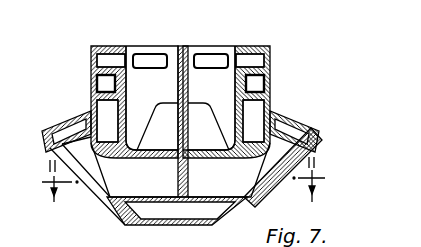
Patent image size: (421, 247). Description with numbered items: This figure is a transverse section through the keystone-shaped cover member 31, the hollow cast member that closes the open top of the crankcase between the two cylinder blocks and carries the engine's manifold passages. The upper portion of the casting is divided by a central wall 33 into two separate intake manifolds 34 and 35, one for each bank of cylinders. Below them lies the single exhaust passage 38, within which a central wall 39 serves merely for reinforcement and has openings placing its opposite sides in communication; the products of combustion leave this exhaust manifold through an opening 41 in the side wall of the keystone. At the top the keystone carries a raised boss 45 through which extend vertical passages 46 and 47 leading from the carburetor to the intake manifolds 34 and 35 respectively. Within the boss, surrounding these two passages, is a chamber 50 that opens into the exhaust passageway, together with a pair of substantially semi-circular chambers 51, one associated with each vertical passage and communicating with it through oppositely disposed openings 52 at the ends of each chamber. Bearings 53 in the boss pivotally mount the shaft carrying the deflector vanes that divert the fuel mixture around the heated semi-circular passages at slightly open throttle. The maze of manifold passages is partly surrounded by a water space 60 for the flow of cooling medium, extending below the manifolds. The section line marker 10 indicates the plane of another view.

The section line 10 is at (180, 179).
The cover member 31 is at (249, 199).
The central wall 33 is at (185, 99).
The intake manifold 34 is at (157, 126).
The intake manifold 35 is at (208, 126).
The exhaust passage 38 is at (229, 170).
The central wall 39 is at (181, 166).
The opening 41 is at (101, 199).
The boss 45 is at (268, 112).
The vertical passage 46 is at (152, 98).
The vertical passage 47 is at (209, 120).
The chamber 50 is at (180, 121).
The semi-circular chamber 51 is at (180, 83).
The opening 52 is at (200, 62).
The bearing 53 is at (100, 62).
The water space 60 is at (180, 168).